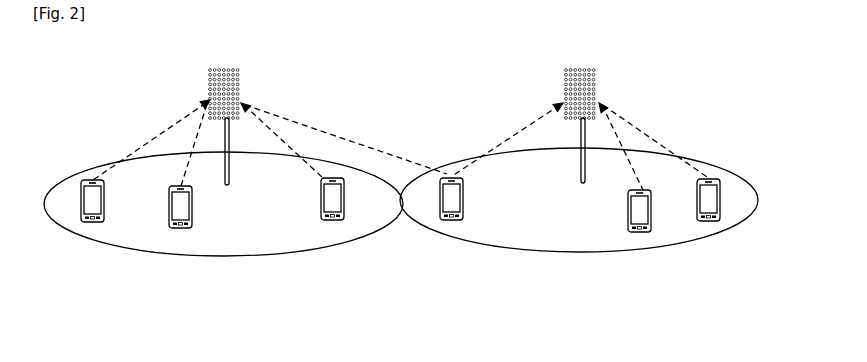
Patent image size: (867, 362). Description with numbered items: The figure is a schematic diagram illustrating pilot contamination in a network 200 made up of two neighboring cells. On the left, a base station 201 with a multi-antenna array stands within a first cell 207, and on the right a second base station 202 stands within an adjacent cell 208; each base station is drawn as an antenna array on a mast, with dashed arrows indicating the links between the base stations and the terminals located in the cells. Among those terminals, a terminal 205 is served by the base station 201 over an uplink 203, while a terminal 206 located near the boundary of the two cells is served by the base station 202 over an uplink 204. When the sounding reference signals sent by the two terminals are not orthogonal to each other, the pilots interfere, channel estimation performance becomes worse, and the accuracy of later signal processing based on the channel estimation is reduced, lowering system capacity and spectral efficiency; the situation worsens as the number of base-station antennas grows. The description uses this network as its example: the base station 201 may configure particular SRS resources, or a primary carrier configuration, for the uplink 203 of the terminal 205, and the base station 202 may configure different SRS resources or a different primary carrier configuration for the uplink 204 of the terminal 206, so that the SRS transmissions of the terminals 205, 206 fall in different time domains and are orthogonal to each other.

The wireless communication system / downlink signal 200 is at (155, 133).
The base station 201 is at (241, 71).
The base station 202 is at (598, 72).
The uplink 203 is at (307, 157).
The uplink 204 is at (483, 152).
The terminal 205 is at (332, 220).
The terminal 206 is at (449, 220).
The first cell 207 is at (222, 256).
The second cell 208 is at (578, 251).